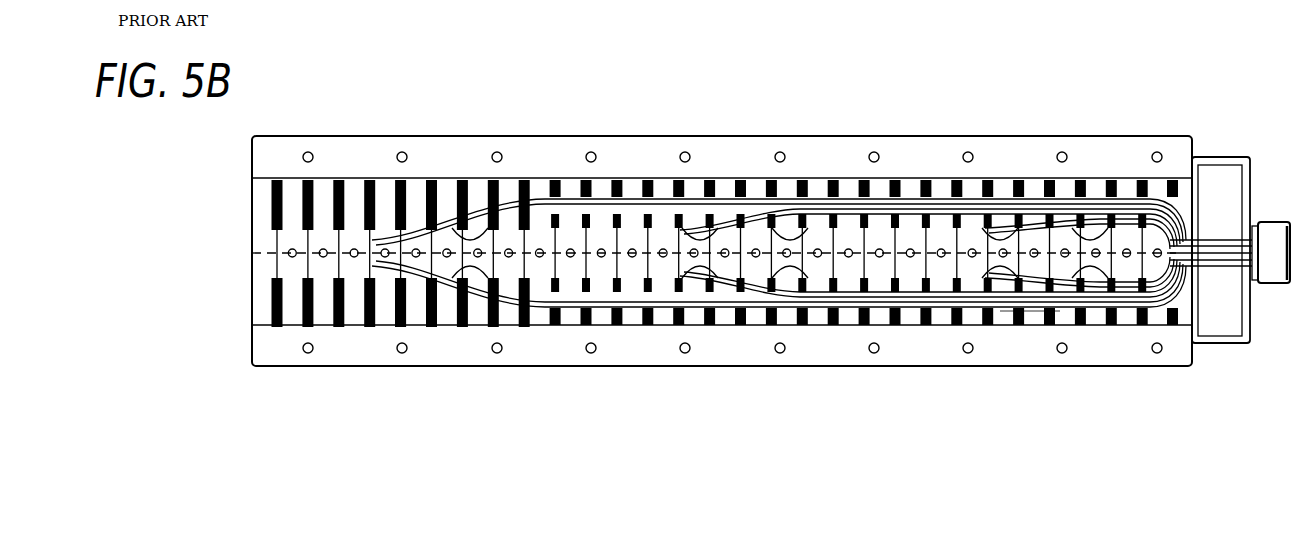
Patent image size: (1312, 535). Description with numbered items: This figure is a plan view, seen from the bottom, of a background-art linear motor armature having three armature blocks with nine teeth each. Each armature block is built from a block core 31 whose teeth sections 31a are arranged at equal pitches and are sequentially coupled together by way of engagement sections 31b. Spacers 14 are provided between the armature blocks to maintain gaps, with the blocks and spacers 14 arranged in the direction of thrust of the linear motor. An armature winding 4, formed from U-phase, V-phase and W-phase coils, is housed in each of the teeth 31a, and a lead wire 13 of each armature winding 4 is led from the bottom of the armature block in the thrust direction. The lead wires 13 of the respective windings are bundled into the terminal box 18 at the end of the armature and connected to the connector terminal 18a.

The block core 31 is at (355, 197).
The teeth sections 31a is at (252, 253).
The engagement sections 31b is at (294, 320).
The armature winding 4 is at (415, 320).
The spacers 14 is at (568, 186).
The lead wire 13 is at (1030, 312).
The terminal box 18 is at (1250, 326).
The connector terminal 18a is at (1274, 222).